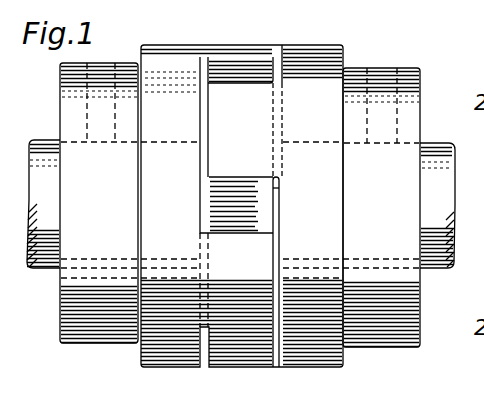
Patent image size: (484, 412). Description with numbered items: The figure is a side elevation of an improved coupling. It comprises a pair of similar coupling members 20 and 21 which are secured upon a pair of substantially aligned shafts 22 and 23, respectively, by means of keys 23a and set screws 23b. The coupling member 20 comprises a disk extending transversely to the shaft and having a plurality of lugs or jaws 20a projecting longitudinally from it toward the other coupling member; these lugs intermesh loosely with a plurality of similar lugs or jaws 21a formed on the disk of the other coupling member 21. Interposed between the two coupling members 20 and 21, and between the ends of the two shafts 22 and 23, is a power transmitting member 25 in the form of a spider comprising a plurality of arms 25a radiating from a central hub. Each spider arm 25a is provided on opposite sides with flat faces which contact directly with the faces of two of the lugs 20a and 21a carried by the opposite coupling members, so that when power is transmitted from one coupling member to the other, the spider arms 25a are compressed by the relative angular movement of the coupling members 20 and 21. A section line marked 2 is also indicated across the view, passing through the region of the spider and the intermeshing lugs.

The section line 2- 2 is at (282, 45).
The coupling member 20 is at (107, 348).
The lugs or jaws 20a is at (155, 375).
The coupling member 21 is at (380, 348).
The lugs or jaws 21a is at (252, 112).
The shaft 22 is at (37, 140).
The shaft 23 is at (441, 143).
The key 23a is at (426, 303).
The set screw 23b is at (98, 76).
The power transmitting member 25 is at (280, 214).
The spider arm 25a is at (210, 375).